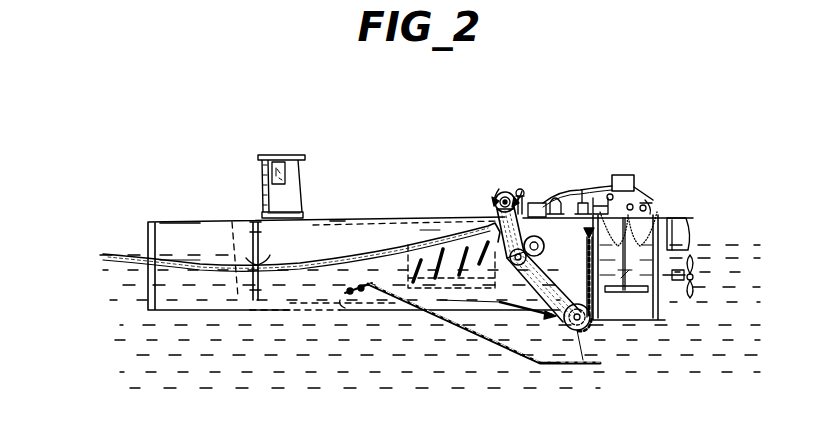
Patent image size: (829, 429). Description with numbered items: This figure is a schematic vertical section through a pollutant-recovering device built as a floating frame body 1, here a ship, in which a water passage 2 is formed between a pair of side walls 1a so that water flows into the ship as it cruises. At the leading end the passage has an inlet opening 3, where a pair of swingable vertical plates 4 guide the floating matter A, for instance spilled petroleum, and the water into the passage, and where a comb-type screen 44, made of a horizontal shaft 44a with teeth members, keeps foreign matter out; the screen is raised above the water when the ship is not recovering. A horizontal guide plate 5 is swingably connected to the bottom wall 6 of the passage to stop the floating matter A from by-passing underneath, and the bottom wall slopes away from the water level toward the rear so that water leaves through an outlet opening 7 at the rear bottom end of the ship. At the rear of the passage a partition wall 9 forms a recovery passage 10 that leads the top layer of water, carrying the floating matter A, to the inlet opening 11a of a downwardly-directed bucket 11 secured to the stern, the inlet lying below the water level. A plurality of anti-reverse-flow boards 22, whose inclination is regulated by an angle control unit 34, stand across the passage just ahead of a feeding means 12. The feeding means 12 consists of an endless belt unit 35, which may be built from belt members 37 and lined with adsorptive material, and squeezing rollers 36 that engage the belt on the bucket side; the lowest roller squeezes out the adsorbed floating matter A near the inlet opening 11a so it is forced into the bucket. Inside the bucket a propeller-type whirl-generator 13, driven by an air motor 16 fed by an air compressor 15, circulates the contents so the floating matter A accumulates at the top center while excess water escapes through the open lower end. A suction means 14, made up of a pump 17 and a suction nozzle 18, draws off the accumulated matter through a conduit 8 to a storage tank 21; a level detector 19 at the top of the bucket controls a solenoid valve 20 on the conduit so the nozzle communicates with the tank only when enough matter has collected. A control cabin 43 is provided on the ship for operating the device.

The floating frame body 1 is at (350, 216).
The side walls 1a is at (333, 219).
The water passage 2 is at (278, 300).
The inlet opening 3 is at (228, 290).
The vertical plates 4 is at (182, 220).
The horizontal guide plate 5 is at (345, 293).
The bottom wall 6 is at (463, 325).
The outlet opening 7 is at (605, 335).
The conduit 8 is at (626, 178).
The partition wall 9 is at (508, 302).
The recovery passage 10 is at (460, 300).
The downwardly-directed bucket 11 is at (668, 310).
The inlet opening 11a is at (648, 342).
The feeding means 12 is at (494, 199).
The whirl-generator 13 is at (668, 303).
The suction means 14 is at (585, 200).
The air compressor 15 is at (533, 203).
The air motor 16 is at (632, 183).
The pump 17 is at (550, 200).
The suction nozzle 18 is at (652, 202).
The level detector 19 is at (676, 213).
The solenoid valve 20 is at (600, 197).
The storage tank 21 is at (580, 203).
The anti-reverse-flow boards 22 is at (457, 270).
The angle control unit 34 is at (406, 232).
The endless belt unit 35 is at (573, 331).
The squeezing rollers 36 is at (516, 196).
The endless belt members 37 is at (541, 364).
The control cabin 43 is at (287, 155).
The screen 44 is at (226, 220).
The horizontal shaft 44a is at (255, 220).
The floating matter A is at (430, 220).